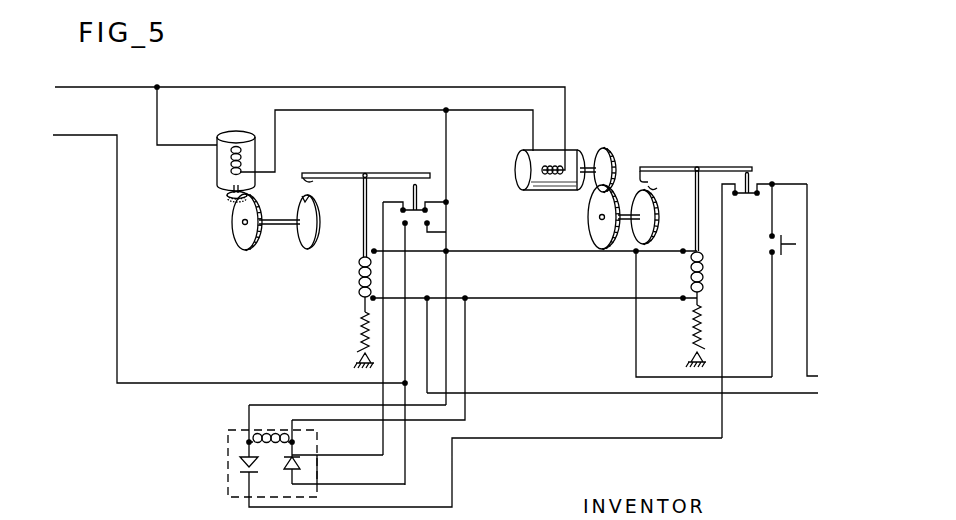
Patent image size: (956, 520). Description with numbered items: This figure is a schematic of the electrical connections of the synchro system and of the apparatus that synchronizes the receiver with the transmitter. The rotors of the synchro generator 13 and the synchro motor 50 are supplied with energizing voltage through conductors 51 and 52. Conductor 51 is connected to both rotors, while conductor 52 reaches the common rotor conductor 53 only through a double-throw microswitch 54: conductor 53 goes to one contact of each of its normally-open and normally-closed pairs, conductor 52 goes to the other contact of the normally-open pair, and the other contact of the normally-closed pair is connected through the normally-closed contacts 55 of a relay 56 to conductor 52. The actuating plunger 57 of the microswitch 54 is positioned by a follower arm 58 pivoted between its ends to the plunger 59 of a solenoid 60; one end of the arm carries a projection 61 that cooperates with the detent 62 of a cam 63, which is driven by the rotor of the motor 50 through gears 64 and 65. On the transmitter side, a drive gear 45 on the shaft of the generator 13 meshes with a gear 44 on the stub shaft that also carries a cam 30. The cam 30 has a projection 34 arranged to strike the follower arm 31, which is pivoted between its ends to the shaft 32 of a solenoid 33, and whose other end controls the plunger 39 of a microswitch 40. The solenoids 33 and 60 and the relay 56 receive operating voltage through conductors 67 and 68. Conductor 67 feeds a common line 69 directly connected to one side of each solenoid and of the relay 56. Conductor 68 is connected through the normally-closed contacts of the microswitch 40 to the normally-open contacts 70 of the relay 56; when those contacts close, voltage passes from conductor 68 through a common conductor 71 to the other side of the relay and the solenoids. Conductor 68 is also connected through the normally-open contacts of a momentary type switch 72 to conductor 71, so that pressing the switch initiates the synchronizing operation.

The synchro generator 13 is at (582, 146).
The cam 30 is at (662, 212).
The follower arm 31 is at (696, 165).
The shaft of solenoid 32 is at (696, 233).
The solenoid 33 is at (690, 275).
The projection 34 is at (661, 182).
The plunger 39 is at (758, 176).
The microswitch 40 is at (746, 198).
The gear 44 is at (588, 220).
The drive gear 45 is at (612, 154).
The synchro motor 50 is at (246, 105).
The conductor 51 is at (114, 87).
The conductor 52 is at (80, 136).
The common rotor conductor 53 is at (340, 127).
The microswitch 54 is at (432, 211).
The normally-closed contacts 55 is at (304, 466).
The relay 56 is at (296, 442).
The actuating plunger 57 is at (412, 190).
The follower arm 58 is at (348, 169).
The plunger 59 is at (362, 244).
The solenoid 60 is at (356, 284).
The projection 61 is at (303, 181).
The detent 62 is at (306, 198).
The cam 63 is at (309, 227).
The gear 64 is at (226, 197).
The gear 65 is at (232, 230).
The conductor 67 is at (806, 394).
The conductor 68 is at (806, 323).
The common line 69 is at (518, 321).
The normally-open contacts 70 is at (226, 466).
The common conductor 71 is at (518, 267).
The momentary type switch 72 is at (770, 243).